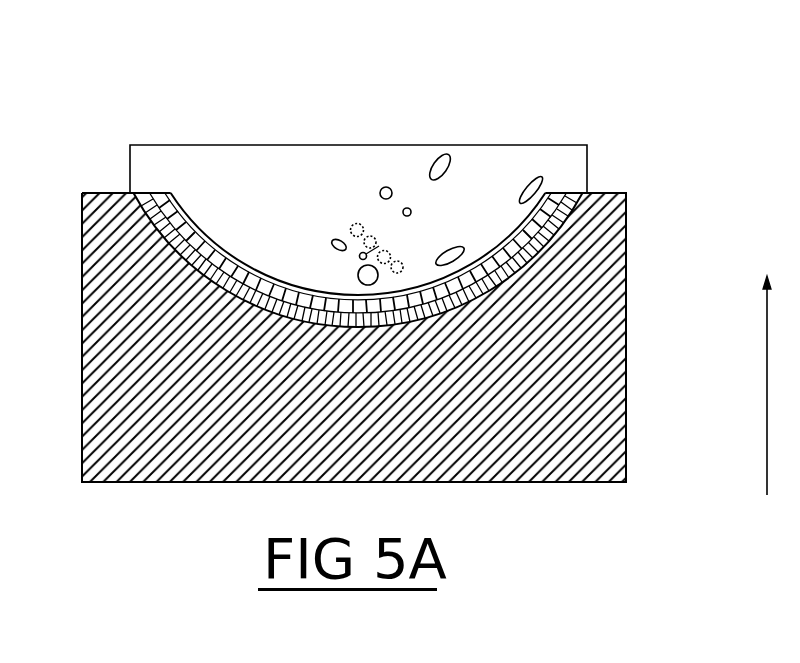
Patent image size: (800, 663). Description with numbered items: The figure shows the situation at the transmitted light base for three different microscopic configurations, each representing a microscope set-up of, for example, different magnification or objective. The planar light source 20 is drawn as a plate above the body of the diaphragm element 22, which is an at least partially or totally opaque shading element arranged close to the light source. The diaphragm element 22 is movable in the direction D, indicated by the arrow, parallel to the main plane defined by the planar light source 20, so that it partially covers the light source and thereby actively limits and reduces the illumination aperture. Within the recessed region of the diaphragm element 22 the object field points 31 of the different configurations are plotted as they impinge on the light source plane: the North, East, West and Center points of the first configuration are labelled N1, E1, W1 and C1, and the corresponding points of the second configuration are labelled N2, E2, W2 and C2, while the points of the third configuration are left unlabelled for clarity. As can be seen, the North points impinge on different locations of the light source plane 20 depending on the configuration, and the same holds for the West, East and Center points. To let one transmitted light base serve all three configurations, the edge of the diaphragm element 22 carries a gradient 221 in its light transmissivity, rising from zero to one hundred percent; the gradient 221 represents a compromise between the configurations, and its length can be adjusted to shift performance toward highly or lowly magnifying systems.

The planar light source 20 is at (203, 143).
The diaphragm element 22 is at (626, 447).
The gradient 221 is at (252, 287).
The object field points 31 is at (455, 157).
The North object field point of first configuration N1 is at (428, 171).
The North object field point of second configuration N2 is at (380, 193).
The East object field point of first configuration E1 is at (536, 181).
The East object field point of second configuration E2 is at (410, 210).
The Center object field point of first configuration C1 is at (506, 261).
The Center object field point of second configuration C2 is at (387, 246).
The West object field point of first configuration W1 is at (358, 275).
The West object field point of second configuration W2 is at (333, 241).
The direction of movement D is at (777, 293).